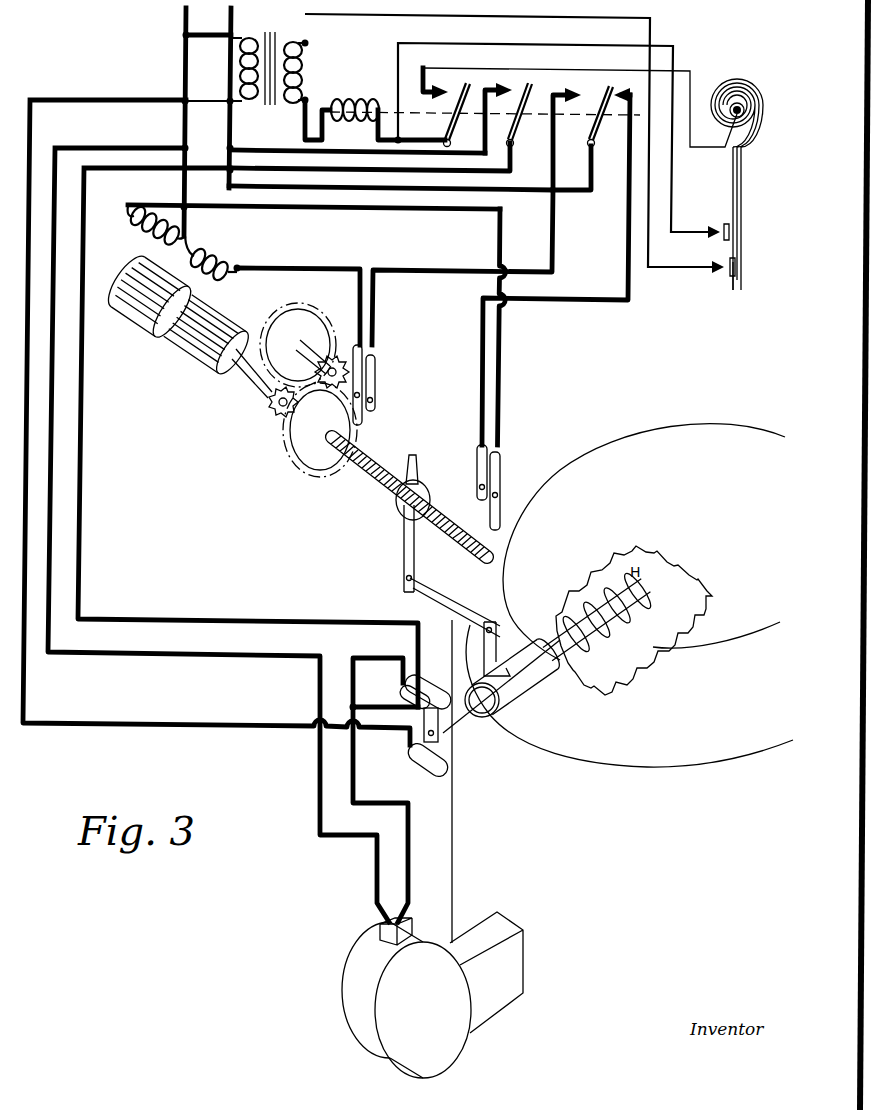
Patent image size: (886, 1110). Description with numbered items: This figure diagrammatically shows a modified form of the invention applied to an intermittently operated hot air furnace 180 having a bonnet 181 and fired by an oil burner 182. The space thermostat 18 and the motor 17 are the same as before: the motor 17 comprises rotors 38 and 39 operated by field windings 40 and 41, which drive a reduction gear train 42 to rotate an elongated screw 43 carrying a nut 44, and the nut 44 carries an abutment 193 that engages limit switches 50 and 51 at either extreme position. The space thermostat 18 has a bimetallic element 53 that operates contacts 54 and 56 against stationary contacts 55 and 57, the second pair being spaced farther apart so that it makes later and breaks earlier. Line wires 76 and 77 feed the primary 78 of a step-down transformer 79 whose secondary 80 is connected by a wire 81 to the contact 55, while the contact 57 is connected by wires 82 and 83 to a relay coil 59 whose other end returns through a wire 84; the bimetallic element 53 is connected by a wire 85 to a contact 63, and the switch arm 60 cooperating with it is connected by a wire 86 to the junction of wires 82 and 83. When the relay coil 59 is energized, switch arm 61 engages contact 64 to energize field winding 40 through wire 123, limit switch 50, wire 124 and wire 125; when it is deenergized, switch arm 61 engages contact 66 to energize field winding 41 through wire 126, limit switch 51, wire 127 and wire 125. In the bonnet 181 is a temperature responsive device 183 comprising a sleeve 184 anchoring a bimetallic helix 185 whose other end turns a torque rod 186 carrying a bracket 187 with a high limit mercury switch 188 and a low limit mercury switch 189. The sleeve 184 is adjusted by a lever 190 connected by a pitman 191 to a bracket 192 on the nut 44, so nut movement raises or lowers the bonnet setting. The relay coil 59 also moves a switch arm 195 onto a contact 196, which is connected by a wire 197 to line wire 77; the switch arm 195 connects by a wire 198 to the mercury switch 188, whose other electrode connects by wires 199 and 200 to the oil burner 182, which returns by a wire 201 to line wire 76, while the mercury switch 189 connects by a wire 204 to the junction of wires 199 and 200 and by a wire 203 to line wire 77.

The motor 17 is at (140, 364).
The space thermostat 18 is at (760, 160).
The rotor 38 is at (188, 350).
The rotor 39 is at (138, 314).
The field winding 40 is at (214, 266).
The field winding 41 is at (134, 232).
The reduction gear train 42 is at (266, 416).
The elongated screw 43 is at (378, 470).
The nut 44 is at (428, 496).
The limit switch 50 is at (376, 378).
The limit switch 51 is at (500, 468).
The bimetallic element 53 is at (760, 86).
The contact 54 is at (736, 278).
The stationary contact 55 is at (722, 272).
The contact 56 is at (724, 230).
The stationary contact 57 is at (712, 238).
The relay coil 59 is at (388, 122).
The switch arm 60 is at (446, 126).
The switch arm 61 is at (590, 130).
The contact 63 is at (432, 90).
The contact 64 is at (573, 87).
The contact 66 is at (627, 86).
The line wire 76 is at (185, 34).
The line wire 77 is at (230, 25).
The primary 78 is at (240, 70).
The step-down transformer 79 is at (270, 33).
The secondary 80 is at (304, 66).
The wire 81 is at (352, 15).
The wire 82 is at (397, 70).
The wire 83 is at (357, 161).
The wire 84 is at (303, 120).
The wire 85 is at (440, 68).
The wire 86 is at (434, 150).
The wire 123 is at (556, 246).
The wire 124 is at (304, 268).
The wire 125 is at (184, 196).
The wire 126 is at (590, 300).
The wire 127 is at (498, 246).
The hot air furnace 180 is at (632, 862).
The bonnet 181 is at (629, 596).
The oil burner 182 is at (356, 978).
The temperature responsive device 183 is at (560, 704).
The sleeve 184 is at (512, 704).
The bimetallic helix 185 is at (586, 606).
The torque rod 186 is at (650, 600).
The bracket 187 is at (440, 754).
The mercury switch 188 is at (430, 684).
The mercury switch 189 is at (430, 784).
The lever 190 is at (482, 640).
The pitman 191 is at (440, 594).
The bracket 192 is at (404, 548).
The abutment 193 is at (414, 456).
The switch arm 195 is at (510, 115).
The contact 196 is at (495, 110).
The wire 197 is at (272, 162).
The wire 198 is at (225, 621).
The wire 199 is at (368, 660).
The wire 200 is at (376, 803).
The wire 201 is at (104, 148).
The wire 203 is at (100, 100).
The wire 204 is at (384, 704).